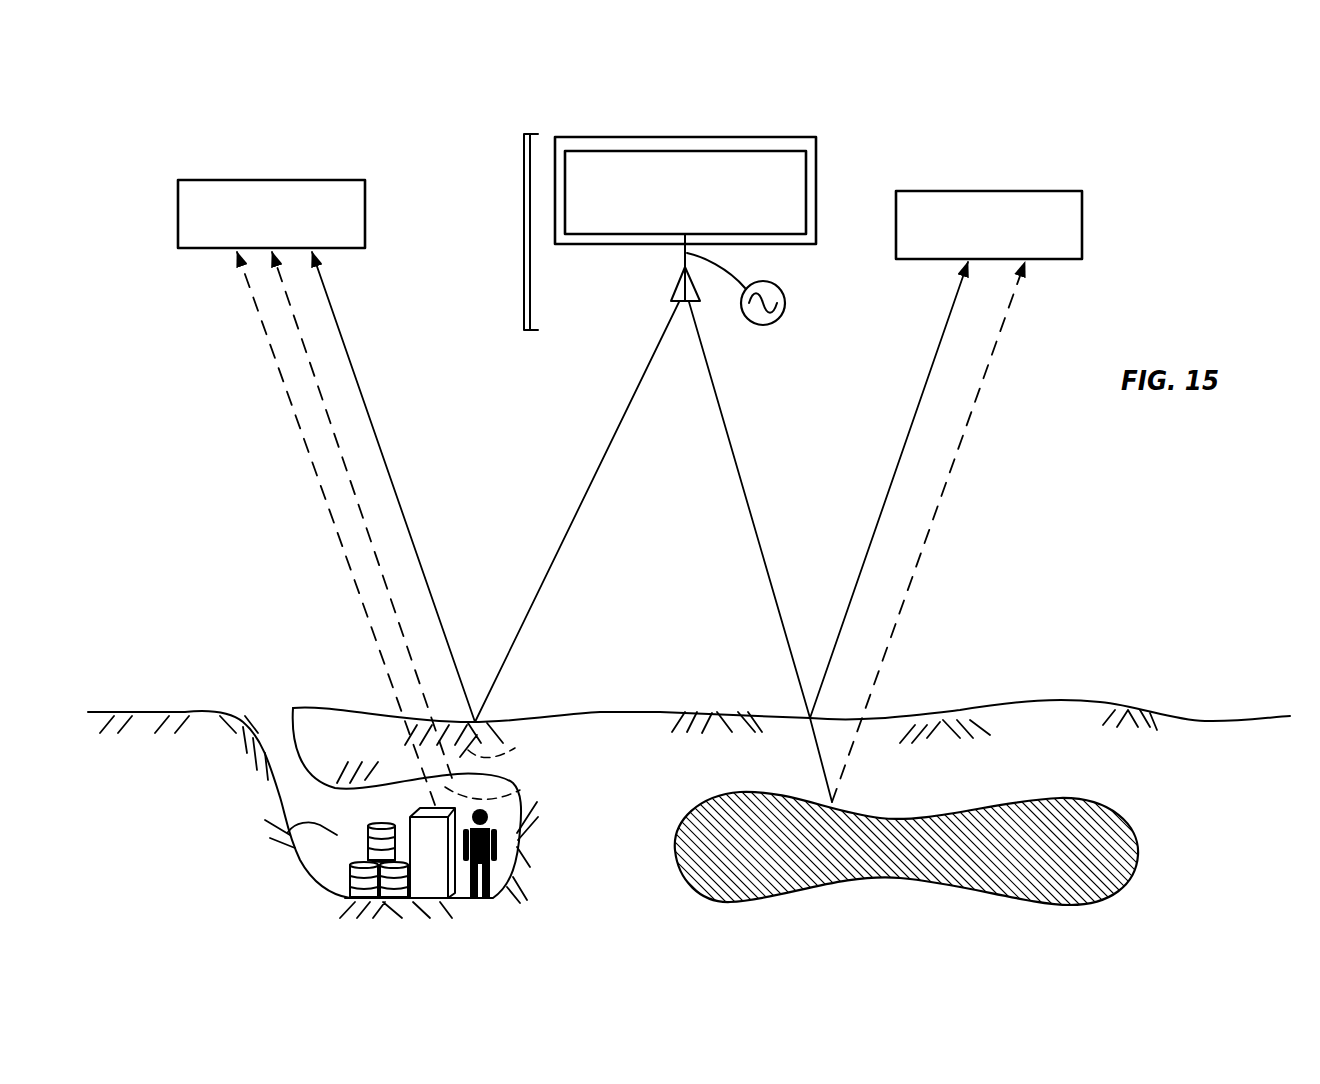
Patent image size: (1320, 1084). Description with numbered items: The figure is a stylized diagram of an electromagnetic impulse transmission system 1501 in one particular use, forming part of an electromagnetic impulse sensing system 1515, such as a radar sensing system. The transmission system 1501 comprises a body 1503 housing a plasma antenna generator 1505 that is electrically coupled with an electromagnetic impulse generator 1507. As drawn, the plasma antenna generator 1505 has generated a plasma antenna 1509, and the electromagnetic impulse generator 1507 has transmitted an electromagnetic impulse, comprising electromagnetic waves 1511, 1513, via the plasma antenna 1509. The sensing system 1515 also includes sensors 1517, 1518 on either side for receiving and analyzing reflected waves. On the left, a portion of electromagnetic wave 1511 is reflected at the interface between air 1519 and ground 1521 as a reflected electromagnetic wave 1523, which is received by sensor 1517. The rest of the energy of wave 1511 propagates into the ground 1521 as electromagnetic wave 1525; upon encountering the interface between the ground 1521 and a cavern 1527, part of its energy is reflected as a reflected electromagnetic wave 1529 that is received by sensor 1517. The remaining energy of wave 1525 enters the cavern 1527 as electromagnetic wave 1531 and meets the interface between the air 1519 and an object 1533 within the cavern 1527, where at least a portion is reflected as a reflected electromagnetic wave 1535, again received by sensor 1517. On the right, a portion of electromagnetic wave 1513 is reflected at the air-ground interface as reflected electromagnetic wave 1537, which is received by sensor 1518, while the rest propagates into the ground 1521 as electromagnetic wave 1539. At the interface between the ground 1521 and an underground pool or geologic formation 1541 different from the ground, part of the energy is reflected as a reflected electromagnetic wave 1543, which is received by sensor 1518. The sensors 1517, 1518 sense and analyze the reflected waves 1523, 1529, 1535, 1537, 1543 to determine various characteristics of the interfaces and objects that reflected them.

The electromagnetic impulse transmission system 1501 is at (524, 246).
The body 1503 is at (817, 158).
The plasma antenna generator 1505 is at (795, 192).
The electromagnetic impulse generator 1507 is at (785, 305).
The plasma antenna 1509 is at (668, 295).
The electromagnetic wave 1511 is at (602, 463).
The electromagnetic wave 1513 is at (730, 437).
The electromagnetic impulse sensing system 1515 is at (1142, 187).
The sensor 1517 is at (313, 192).
The sensor 1518 is at (1015, 200).
The air 1519 is at (219, 774).
The ground 1521 is at (791, 731).
The reflected electromagnetic wave 1523 is at (407, 525).
The electromagnetic wave 1525 is at (523, 742).
The cavern 1527 is at (293, 850).
The reflected electromagnetic wave 1529 is at (345, 442).
The electromagnetic wave 1531 is at (520, 785).
The object 1533 is at (432, 848).
The reflected electromagnetic wave 1535 is at (353, 590).
The reflected electromagnetic wave 1537 is at (881, 510).
The electromagnetic wave 1539 is at (807, 732).
The underground pool or geologic formation 1541 is at (938, 880).
The reflected electromagnetic wave 1543 is at (935, 516).